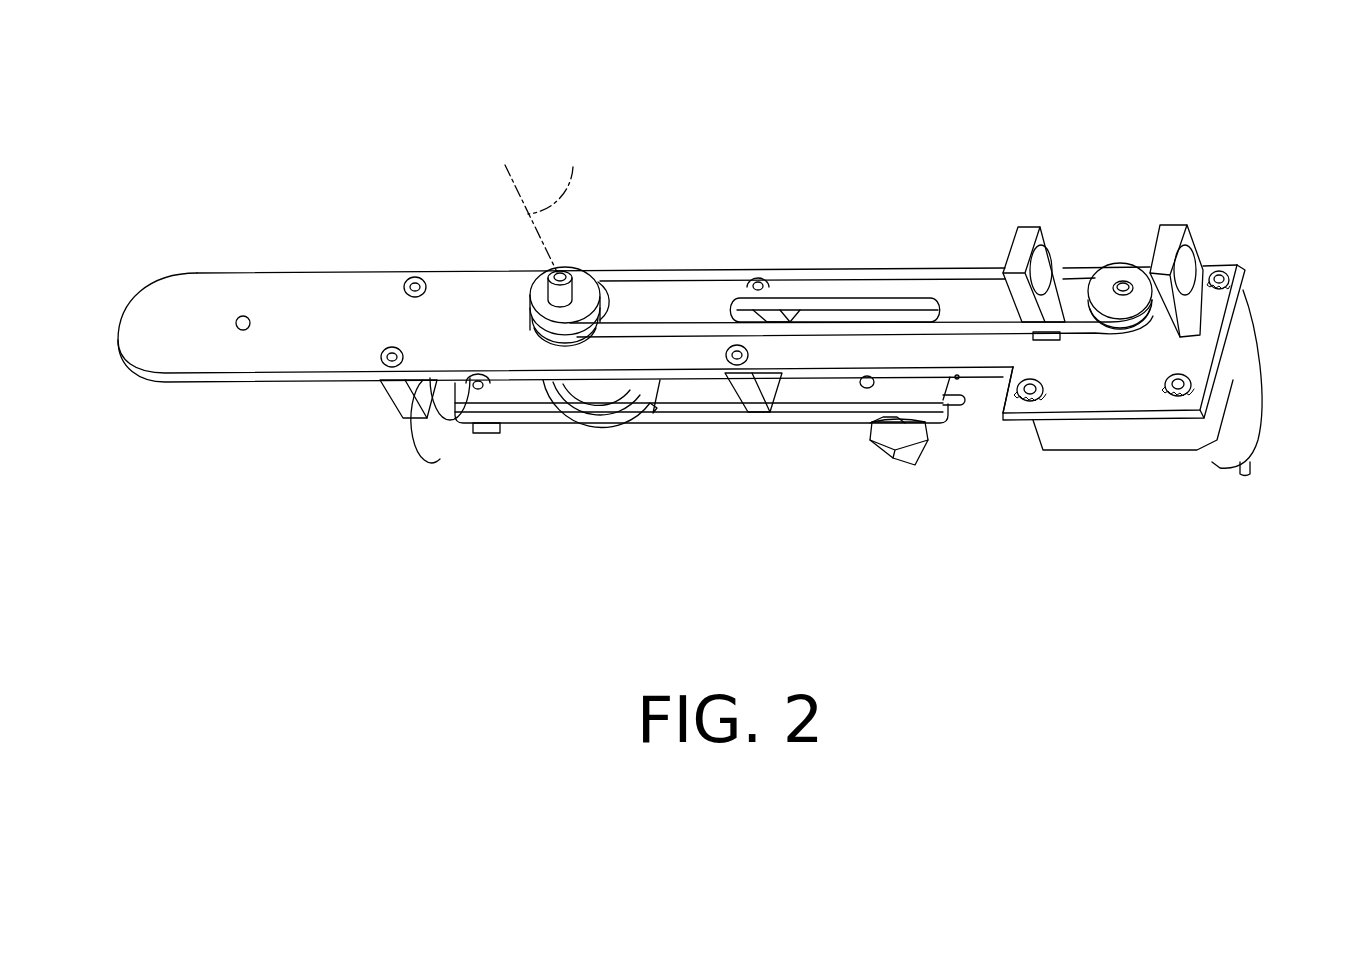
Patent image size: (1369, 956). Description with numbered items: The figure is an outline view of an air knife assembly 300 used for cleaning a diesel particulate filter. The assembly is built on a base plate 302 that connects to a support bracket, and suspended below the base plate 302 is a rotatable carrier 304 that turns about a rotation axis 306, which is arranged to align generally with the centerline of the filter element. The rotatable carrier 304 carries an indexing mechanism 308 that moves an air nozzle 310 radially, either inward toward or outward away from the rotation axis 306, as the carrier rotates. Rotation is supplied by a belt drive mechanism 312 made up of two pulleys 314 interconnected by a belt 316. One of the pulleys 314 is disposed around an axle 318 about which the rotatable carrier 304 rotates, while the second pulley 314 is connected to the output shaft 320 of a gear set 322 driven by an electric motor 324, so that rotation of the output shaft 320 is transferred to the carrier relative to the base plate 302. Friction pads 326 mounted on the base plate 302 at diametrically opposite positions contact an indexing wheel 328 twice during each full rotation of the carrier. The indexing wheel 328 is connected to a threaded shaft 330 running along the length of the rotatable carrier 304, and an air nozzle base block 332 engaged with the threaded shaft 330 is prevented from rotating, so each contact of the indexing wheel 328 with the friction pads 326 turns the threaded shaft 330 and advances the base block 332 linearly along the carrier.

The air knife assembly 300 is at (1031, 132).
The base plate 302 is at (295, 295).
The rotatable carrier 304 is at (686, 393).
The rotation axis 306 is at (551, 205).
The indexing mechanism 308 is at (964, 404).
The air nozzle 310 is at (919, 455).
The belt drive mechanism 312 is at (836, 192).
The pulleys 314 is at (590, 293).
The belt 316 is at (850, 272).
The axle 318 is at (571, 290).
The output shaft 320 is at (1127, 287).
The gear set 322 is at (1105, 433).
The electric motor 324 is at (1240, 427).
The friction pads 326 is at (403, 398).
The indexing wheel 328 is at (455, 437).
The threaded shaft 330 is at (968, 400).
The air nozzle base block 332 is at (868, 424).